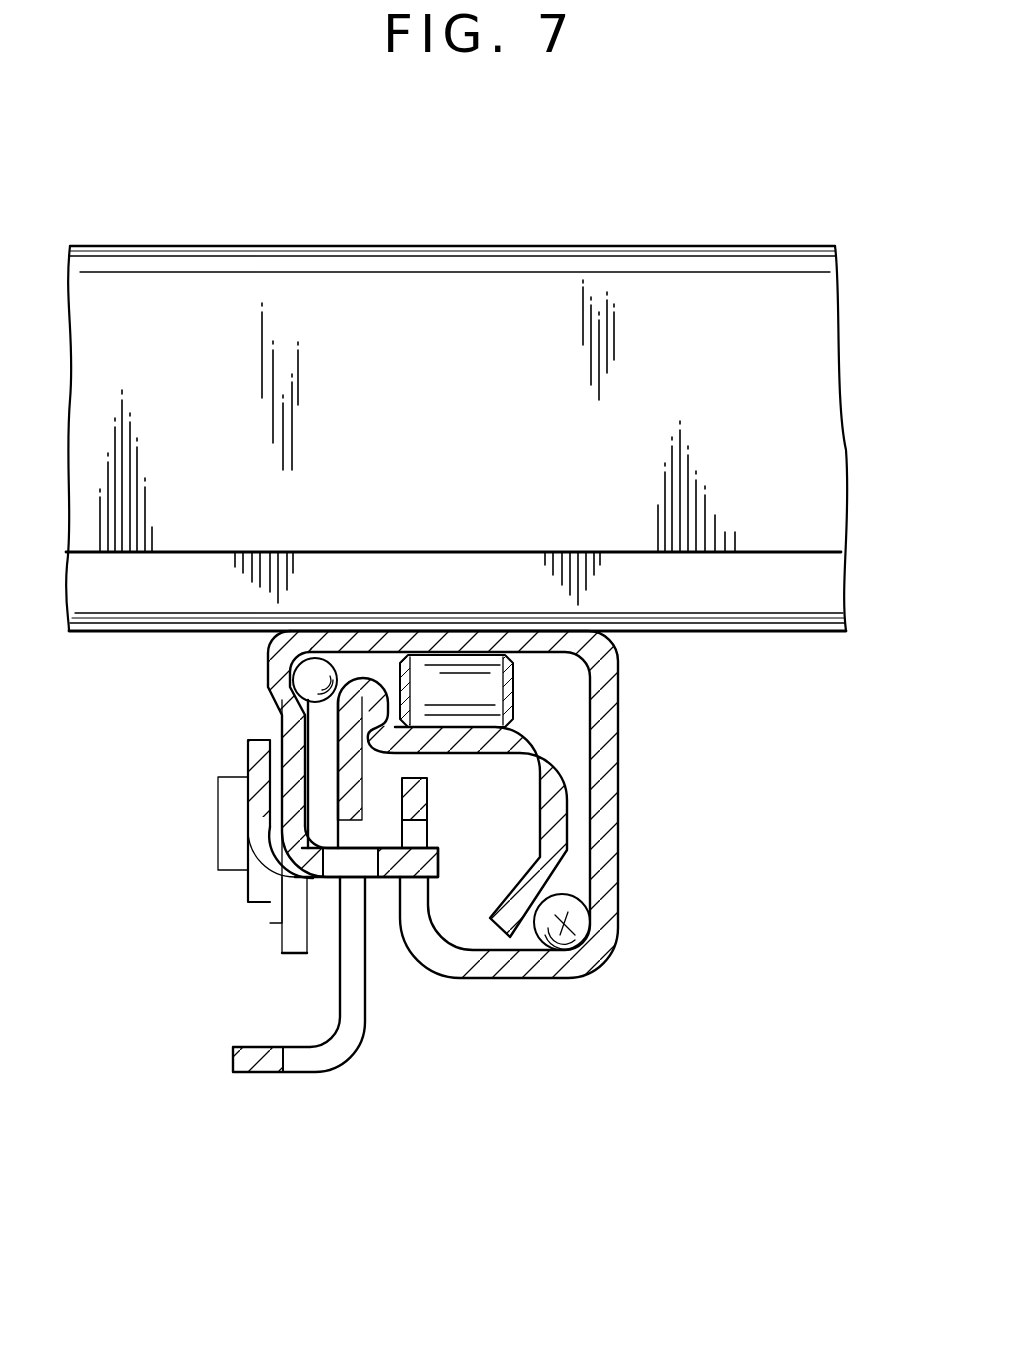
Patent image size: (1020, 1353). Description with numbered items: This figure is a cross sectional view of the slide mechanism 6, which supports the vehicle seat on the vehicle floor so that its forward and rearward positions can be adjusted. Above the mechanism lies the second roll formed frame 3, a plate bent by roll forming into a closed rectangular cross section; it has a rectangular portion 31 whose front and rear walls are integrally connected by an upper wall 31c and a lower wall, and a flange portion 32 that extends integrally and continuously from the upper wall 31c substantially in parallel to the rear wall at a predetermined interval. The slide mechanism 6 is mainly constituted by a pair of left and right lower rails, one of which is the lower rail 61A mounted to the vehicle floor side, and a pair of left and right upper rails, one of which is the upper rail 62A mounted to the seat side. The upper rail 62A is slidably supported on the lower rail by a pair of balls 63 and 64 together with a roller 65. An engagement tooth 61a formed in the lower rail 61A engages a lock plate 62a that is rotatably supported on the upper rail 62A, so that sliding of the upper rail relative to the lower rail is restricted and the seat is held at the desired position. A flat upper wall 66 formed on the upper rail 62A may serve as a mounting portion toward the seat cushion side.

The second roll formed frame 3 is at (500, 236).
The rectangular portion 31 is at (125, 645).
The upper wall 31c is at (232, 240).
The flange portion 32 is at (749, 492).
The slide mechanism 6 is at (636, 906).
The lower rail 61A is at (340, 1082).
The engagement tooth 61a is at (355, 912).
The upper rail 62A is at (630, 764).
The lock plate 62a is at (298, 858).
The ball 63 is at (572, 937).
The ball 64 is at (328, 668).
The roller 65 is at (475, 685).
The flat upper wall 66 is at (430, 640).